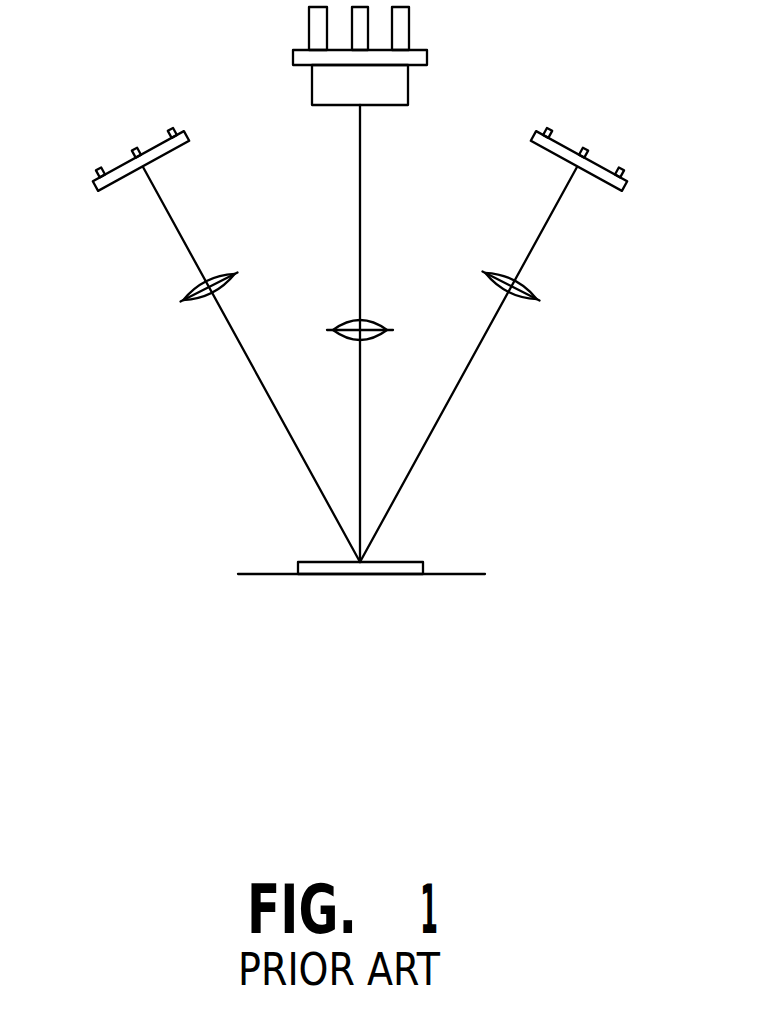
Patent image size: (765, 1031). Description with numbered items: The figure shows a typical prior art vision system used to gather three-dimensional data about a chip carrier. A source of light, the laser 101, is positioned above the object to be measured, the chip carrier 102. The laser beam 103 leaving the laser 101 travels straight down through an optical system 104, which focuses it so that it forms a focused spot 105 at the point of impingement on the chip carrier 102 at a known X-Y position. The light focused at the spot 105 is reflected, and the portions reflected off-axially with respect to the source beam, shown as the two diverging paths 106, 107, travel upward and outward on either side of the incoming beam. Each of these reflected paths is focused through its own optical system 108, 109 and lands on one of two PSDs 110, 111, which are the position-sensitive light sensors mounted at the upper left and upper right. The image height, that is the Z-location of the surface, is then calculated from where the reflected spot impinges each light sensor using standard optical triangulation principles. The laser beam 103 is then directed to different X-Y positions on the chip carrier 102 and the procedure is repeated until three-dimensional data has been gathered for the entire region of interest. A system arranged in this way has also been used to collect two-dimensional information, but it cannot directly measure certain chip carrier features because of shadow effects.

The laser 101 is at (407, 90).
The chip carrier 102 is at (425, 562).
The laser beam 103 is at (360, 148).
The optical system 104 is at (370, 320).
The focused spot 105 is at (362, 562).
The off-axially reflected light 106 is at (258, 382).
The off-axially reflected light 107 is at (444, 408).
The optical system 108 is at (188, 287).
The optical system 109 is at (532, 292).
The PSD 110 is at (90, 185).
The PSD 111 is at (630, 187).